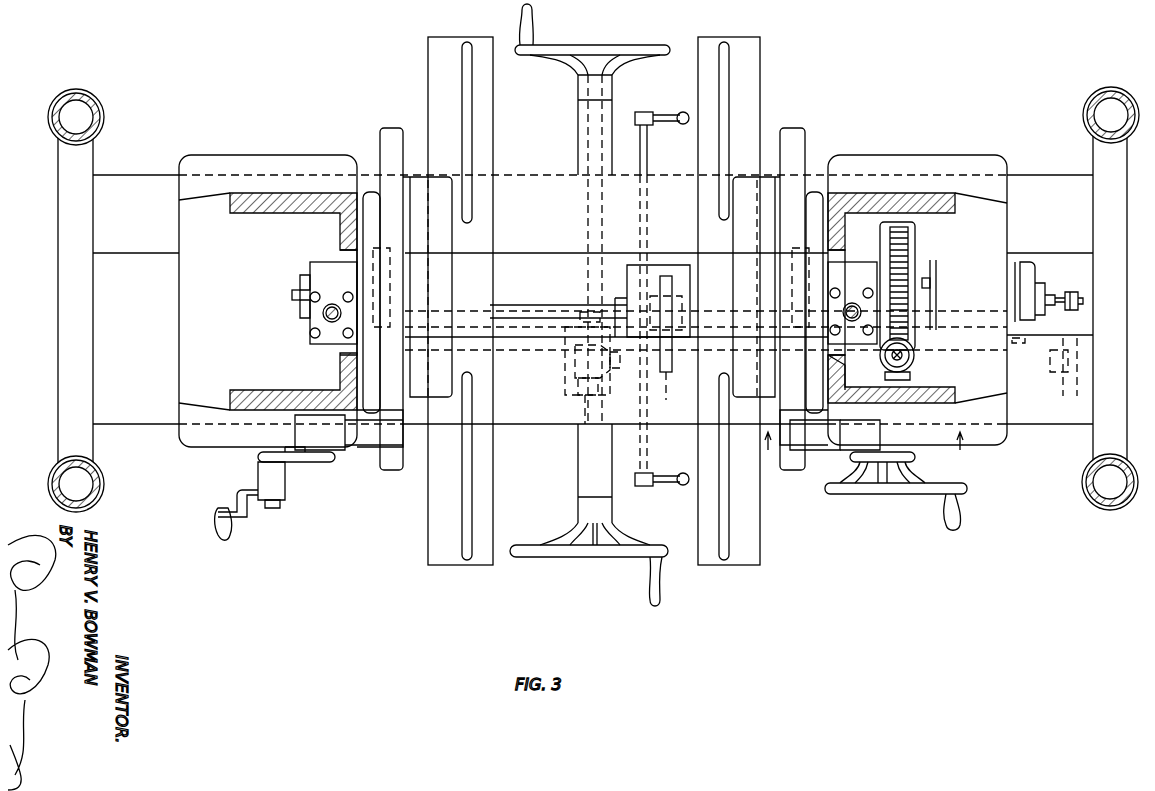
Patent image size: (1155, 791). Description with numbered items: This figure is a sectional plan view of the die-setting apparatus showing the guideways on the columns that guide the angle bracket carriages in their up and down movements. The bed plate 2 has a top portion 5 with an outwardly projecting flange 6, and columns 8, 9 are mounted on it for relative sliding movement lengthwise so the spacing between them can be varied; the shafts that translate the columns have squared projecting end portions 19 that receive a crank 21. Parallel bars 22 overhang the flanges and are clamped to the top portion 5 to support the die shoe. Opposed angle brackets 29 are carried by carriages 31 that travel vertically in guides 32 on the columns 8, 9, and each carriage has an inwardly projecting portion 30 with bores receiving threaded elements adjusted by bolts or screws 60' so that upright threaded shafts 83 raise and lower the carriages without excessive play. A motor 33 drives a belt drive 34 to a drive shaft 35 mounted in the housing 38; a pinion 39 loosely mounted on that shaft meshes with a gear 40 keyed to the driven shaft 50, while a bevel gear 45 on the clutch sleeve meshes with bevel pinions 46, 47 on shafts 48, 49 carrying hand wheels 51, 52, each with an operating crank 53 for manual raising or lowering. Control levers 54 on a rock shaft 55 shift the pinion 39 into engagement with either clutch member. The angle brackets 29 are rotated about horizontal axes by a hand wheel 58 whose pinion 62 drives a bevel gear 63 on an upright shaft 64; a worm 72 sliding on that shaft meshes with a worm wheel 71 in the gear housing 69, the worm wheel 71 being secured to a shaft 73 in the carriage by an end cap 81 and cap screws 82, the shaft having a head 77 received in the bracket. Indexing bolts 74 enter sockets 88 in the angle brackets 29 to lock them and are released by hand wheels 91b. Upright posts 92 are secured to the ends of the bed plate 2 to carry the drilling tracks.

The bed plate 2 is at (519, 434).
The top portion 5 is at (1040, 193).
The flange 6 is at (869, 453).
The column 8 is at (279, 186).
The column 9 is at (938, 187).
The projecting end portion 19 is at (272, 508).
The crank 21 is at (216, 510).
The parallel bars 22 is at (484, 103).
The angle brackets 29 is at (479, 233).
The inwardly projecting portion 30 is at (350, 262).
The carriages 31 is at (377, 183).
The guides 32 is at (345, 222).
The motor 33 is at (1027, 268).
The belt drive 34 is at (1078, 325).
The drive shaft 35 is at (1020, 365).
The housing 38 is at (618, 281).
The pinion 39 is at (666, 372).
The gear 40 is at (672, 280).
The bevel gear 45 is at (600, 360).
The bevel pinion 46 is at (578, 380).
The bevel pinion 47 is at (580, 342).
The shaft 48 is at (585, 460).
The shaft 49 is at (587, 124).
The driven shaft 50 is at (511, 305).
The hand wheel 51 is at (535, 555).
The hand wheel 52 is at (648, 45).
The operating crank 53 is at (533, 8).
The control levers 54 is at (664, 112).
The rock shaft 55 is at (647, 146).
The hand wheel 58 is at (905, 496).
The bolts or screws 60' is at (572, 313).
The pinion 62 is at (912, 376).
The bevel gear 63 is at (914, 352).
The upright shaft 64 is at (902, 352).
The gear housing 69 is at (912, 224).
The worm wheel 71 is at (905, 238).
The worm 72 is at (850, 370).
The shaft 73 is at (325, 280).
The indexing bolts 74 is at (360, 450).
The head 77 is at (392, 270).
The end caps 81 is at (300, 278).
The cap screws 82 is at (292, 293).
The upright threaded shafts 83 is at (323, 313).
The sockets 88 is at (392, 133).
The hand wheels 91b is at (860, 462).
The upright posts 92 is at (48, 117).